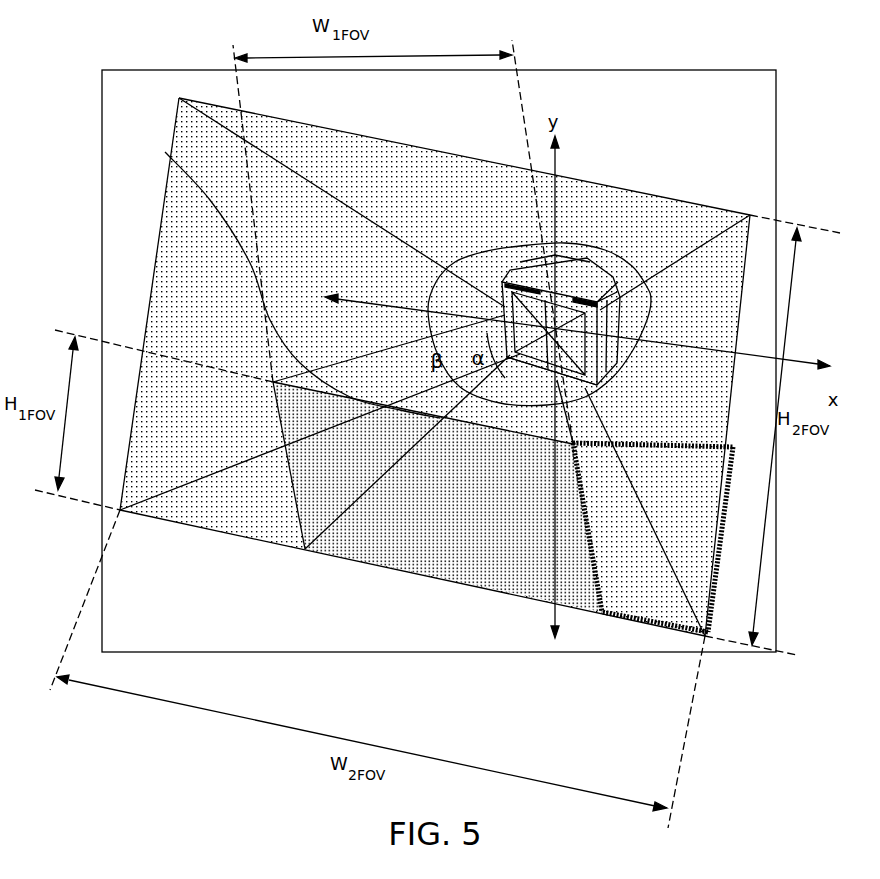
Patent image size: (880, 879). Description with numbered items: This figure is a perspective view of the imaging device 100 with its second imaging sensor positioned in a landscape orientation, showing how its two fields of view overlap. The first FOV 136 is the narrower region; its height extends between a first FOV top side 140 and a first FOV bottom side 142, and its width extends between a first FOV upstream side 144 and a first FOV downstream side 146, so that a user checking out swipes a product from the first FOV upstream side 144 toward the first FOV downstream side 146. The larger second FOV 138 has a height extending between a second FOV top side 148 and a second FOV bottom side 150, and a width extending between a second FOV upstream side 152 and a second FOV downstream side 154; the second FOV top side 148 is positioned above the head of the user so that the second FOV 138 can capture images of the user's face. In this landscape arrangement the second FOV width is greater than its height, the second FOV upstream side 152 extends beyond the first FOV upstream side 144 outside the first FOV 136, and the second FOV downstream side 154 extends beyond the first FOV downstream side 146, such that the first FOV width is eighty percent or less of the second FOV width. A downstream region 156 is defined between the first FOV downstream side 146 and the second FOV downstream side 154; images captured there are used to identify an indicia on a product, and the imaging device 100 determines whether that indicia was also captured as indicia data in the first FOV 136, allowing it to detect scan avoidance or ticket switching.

The imaging device 100 is at (600, 262).
The first FOV 136 is at (335, 528).
The second FOV 138 is at (175, 240).
The first FOV top side 140 is at (165, 152).
The first FOV bottom side 142 is at (457, 585).
The first FOV upstream side 144 is at (283, 483).
The first FOV downstream side 146 is at (707, 570).
The second FOV top side 148 is at (575, 180).
The second FOV bottom side 150 is at (650, 627).
The second FOV upstream side 152 is at (152, 275).
The second FOV downstream side 154 is at (740, 310).
The downstream region 156 is at (712, 576).